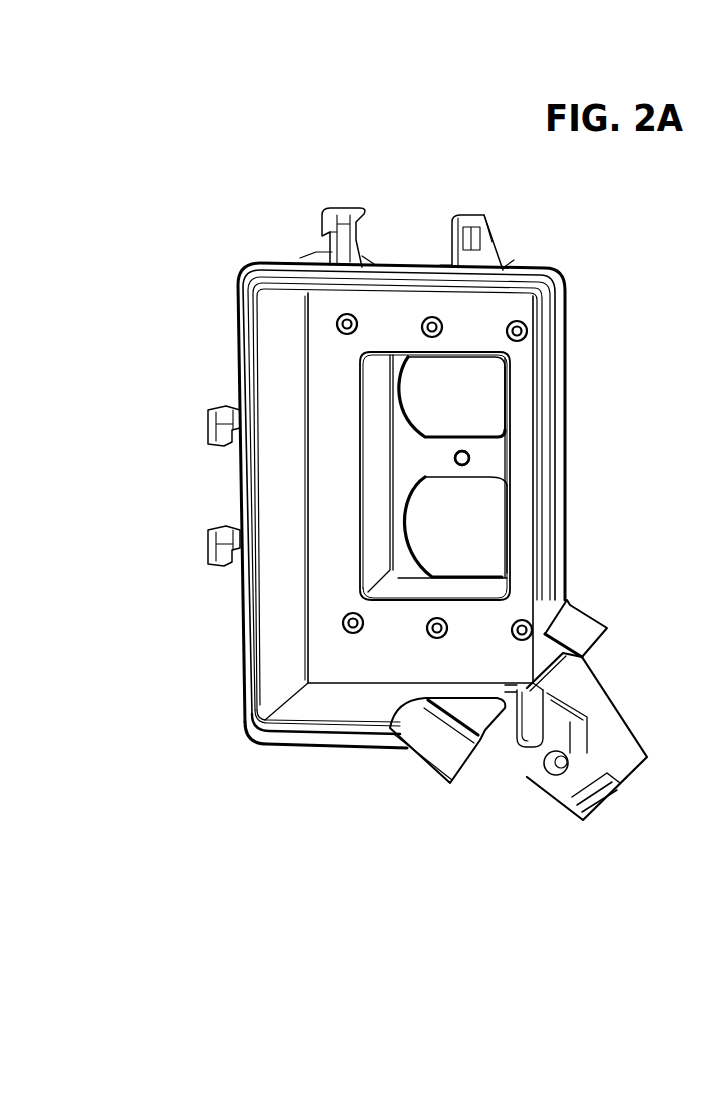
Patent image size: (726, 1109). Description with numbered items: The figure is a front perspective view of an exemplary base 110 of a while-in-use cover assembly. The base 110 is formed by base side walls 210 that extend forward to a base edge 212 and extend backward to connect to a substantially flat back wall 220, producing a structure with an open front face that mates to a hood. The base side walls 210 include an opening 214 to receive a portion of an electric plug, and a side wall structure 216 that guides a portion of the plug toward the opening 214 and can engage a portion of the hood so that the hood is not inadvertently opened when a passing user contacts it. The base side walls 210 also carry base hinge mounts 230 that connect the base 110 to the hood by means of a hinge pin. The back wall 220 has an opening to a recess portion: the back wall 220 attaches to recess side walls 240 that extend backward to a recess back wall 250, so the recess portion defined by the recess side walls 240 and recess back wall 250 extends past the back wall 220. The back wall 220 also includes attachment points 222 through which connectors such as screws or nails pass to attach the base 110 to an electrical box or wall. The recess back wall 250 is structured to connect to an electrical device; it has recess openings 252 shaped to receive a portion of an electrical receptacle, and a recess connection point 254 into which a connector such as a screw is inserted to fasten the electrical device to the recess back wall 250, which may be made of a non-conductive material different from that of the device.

The base 110 is at (280, 185).
The base side walls 210 is at (527, 261).
The base edge 212 is at (250, 645).
The opening 214 is at (616, 657).
The side wall structure 216 is at (610, 824).
The back wall 220 is at (414, 476).
The attachment points 222 is at (522, 329).
The base hinge mounts 230 is at (500, 200).
The recess side walls 240 is at (422, 358).
The recess back wall 250 is at (435, 459).
The recess openings 252 is at (487, 380).
The recess connection point 254 is at (470, 458).